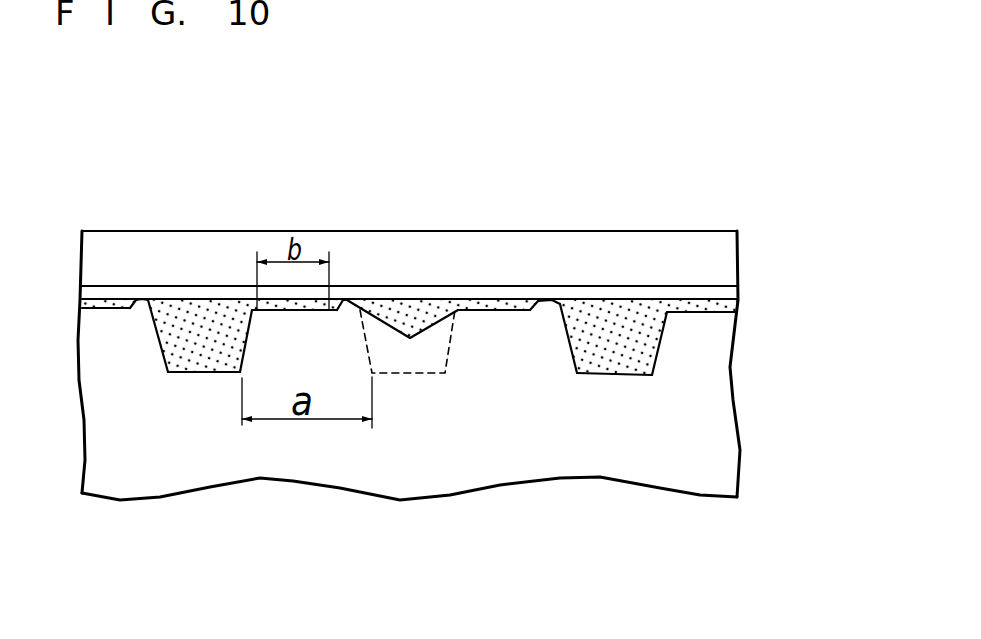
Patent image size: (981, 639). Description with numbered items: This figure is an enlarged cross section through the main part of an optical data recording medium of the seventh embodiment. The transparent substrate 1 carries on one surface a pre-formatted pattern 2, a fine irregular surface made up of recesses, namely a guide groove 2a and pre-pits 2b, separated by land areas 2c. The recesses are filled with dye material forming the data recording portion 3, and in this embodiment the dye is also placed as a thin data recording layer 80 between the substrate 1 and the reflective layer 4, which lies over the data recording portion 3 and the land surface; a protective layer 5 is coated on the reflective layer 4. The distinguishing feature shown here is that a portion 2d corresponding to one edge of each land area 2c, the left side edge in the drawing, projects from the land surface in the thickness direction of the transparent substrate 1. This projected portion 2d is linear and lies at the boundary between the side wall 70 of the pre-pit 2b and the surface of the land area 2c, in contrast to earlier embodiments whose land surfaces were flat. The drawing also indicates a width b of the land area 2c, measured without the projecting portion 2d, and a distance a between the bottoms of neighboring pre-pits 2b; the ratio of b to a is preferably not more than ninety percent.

The transparent substrate 1 is at (717, 417).
The pre-formatted pattern 2 is at (197, 570).
The guide groove 2a is at (410, 340).
The pre-pit 2b is at (210, 373).
The land area 2c is at (108, 305).
The projected portion 2d is at (140, 300).
The data recording portion 3 is at (200, 312).
The reflective layer 4 is at (740, 292).
The protective layer 5 is at (727, 262).
The side wall 70 is at (163, 350).
The thin data recording layer 80 is at (740, 310).